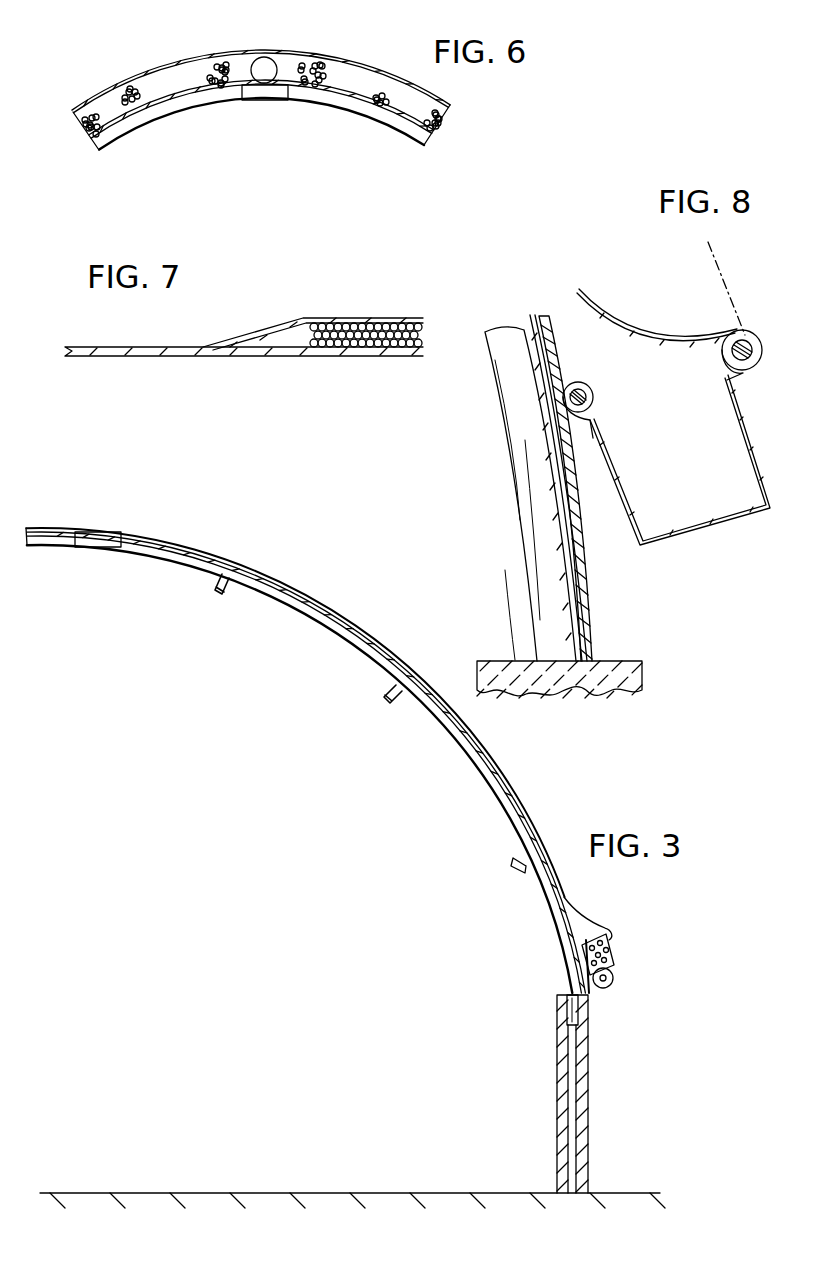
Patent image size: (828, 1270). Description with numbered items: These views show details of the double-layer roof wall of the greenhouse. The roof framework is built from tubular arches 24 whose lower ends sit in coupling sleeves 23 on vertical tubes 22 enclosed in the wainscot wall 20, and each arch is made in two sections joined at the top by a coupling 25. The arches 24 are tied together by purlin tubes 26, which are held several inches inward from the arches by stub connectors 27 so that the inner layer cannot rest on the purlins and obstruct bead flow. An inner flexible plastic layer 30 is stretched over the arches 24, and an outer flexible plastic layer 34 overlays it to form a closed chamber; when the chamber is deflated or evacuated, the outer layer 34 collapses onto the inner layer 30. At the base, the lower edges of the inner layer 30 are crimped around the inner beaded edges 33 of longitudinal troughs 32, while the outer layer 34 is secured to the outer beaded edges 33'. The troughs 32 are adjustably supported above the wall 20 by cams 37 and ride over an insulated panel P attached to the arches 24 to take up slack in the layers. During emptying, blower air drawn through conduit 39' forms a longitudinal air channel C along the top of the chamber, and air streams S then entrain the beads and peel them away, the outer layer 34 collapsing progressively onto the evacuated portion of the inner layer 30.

In FIG. 8, the wainscot wall 20 is at (637, 662).
In FIG. 3, the wainscot wall 20 is at (585, 1107).
In FIG. 3, the vertical pipes or tubes 22 is at (573, 1060).
In FIG. 3, the coupling sleeves 23 is at (563, 1012).
In FIG. 6, the tubular arches or bows 24 is at (145, 124).
In FIG. 8, the tubular arches or bows 24 is at (528, 452).
In FIG. 3, the tubular arches or bows 24 is at (488, 787).
In FIG. 6, the couplings 25 is at (265, 100).
In FIG. 3, the couplings 25 is at (103, 547).
In FIG. 3, the purlin tubes 26 is at (392, 702).
In FIG. 3, the stub connectors 27 is at (230, 592).
In FIG. 6, the inner flexible layer of plastic sheeting 30 is at (350, 100).
In FIG. 7, the inner flexible layer of plastic sheeting 30 is at (323, 354).
In FIG. 8, the inner flexible layer of plastic sheeting 30 is at (540, 368).
In FIG. 3, the inner flexible layer of plastic sheeting 30 is at (560, 910).
In FIG. 8, the troughs 32 is at (720, 528).
In FIG. 3, the troughs 32 is at (613, 947).
In FIG. 8, the beaded edges 33 is at (604, 394).
In FIG. 8, the outer beaded edges 33' is at (761, 334).
In FIG. 6, the outer flexible layer of plastic sheeting 34 is at (337, 62).
In FIG. 7, the outer flexible layer of plastic sheeting 34 is at (335, 317).
In FIG. 8, the outer flexible layer of plastic sheeting 34 is at (640, 315).
In FIG. 3, the outer flexible layer of plastic sheeting 34 is at (588, 925).
In FIG. 3, the cams 37 is at (613, 975).
In FIG. 6, the conduit 39' is at (289, 50).
In FIG. 6, the air channel C is at (240, 65).
In FIG. 8, the insulated panel P is at (592, 604).
In FIG. 3, the insulated panel P is at (585, 985).
In FIG. 7, the air streams S is at (298, 338).